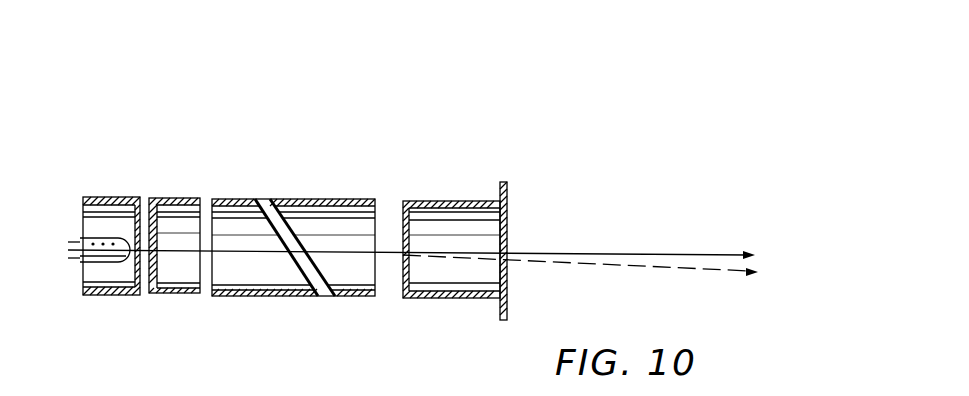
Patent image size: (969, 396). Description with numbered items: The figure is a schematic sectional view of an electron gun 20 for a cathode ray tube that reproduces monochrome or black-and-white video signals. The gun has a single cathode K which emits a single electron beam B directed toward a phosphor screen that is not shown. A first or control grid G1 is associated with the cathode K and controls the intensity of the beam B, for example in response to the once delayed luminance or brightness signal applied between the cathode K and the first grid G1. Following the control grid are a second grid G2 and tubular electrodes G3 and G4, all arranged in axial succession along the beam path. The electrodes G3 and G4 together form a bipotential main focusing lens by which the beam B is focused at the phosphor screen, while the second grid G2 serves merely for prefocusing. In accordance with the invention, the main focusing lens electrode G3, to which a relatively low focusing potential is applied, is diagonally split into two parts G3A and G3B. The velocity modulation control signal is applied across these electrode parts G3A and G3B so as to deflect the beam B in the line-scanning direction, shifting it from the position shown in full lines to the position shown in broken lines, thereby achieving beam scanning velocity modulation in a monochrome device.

The electron gun 20 is at (378, 180).
The cathode K is at (92, 268).
The electron beam B is at (703, 254).
The first or control grid G1 is at (108, 297).
The second grid G2 is at (175, 297).
The tubular electrode (main focusing lens electrode) G3 is at (308, 295).
The electrode part G3A is at (250, 297).
The electrode part G3B is at (347, 297).
The tubular electrode G4 is at (460, 297).